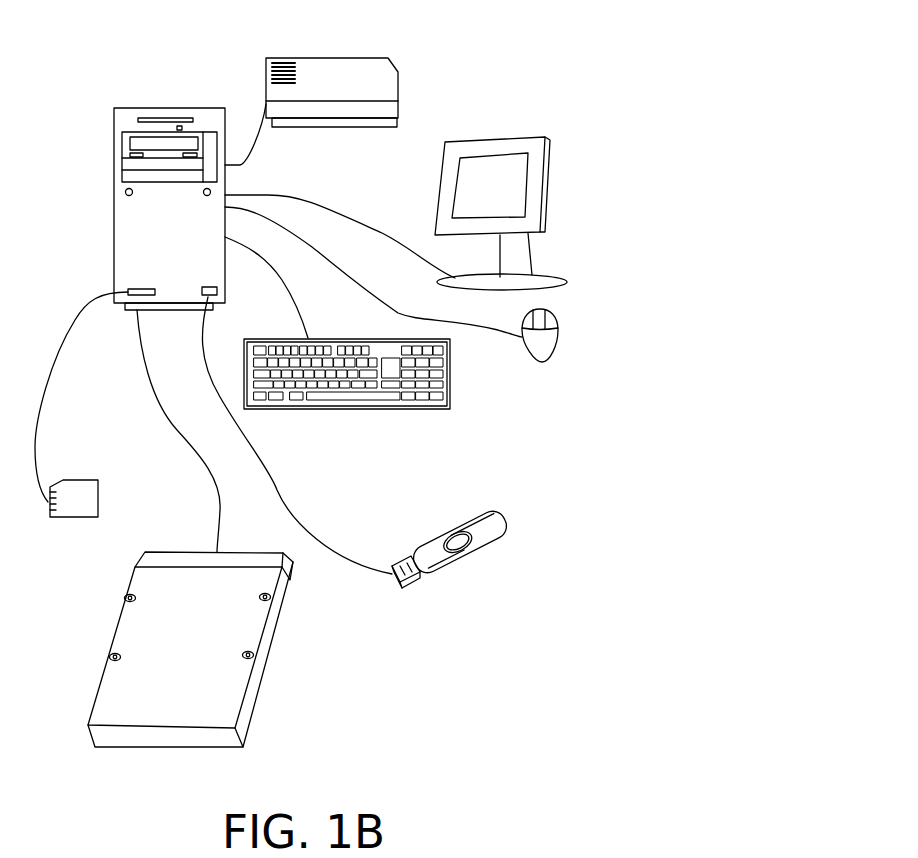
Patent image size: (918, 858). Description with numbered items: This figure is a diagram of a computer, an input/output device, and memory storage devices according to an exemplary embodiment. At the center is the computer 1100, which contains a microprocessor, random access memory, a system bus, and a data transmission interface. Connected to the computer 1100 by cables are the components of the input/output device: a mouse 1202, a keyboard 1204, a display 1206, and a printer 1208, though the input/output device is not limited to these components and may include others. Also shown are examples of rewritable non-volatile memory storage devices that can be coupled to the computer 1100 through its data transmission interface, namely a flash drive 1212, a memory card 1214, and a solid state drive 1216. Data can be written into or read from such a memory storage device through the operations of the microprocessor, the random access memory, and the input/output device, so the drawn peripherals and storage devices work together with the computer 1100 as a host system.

The computer 1100 is at (170, 108).
The mouse 1202 is at (558, 335).
The keyboard 1204 is at (450, 385).
The display 1206 is at (502, 138).
The printer 1208 is at (328, 58).
The flash drive 1212 is at (440, 532).
The memory card 1214 is at (98, 490).
The solid state drive (SSD) 1216 is at (239, 541).